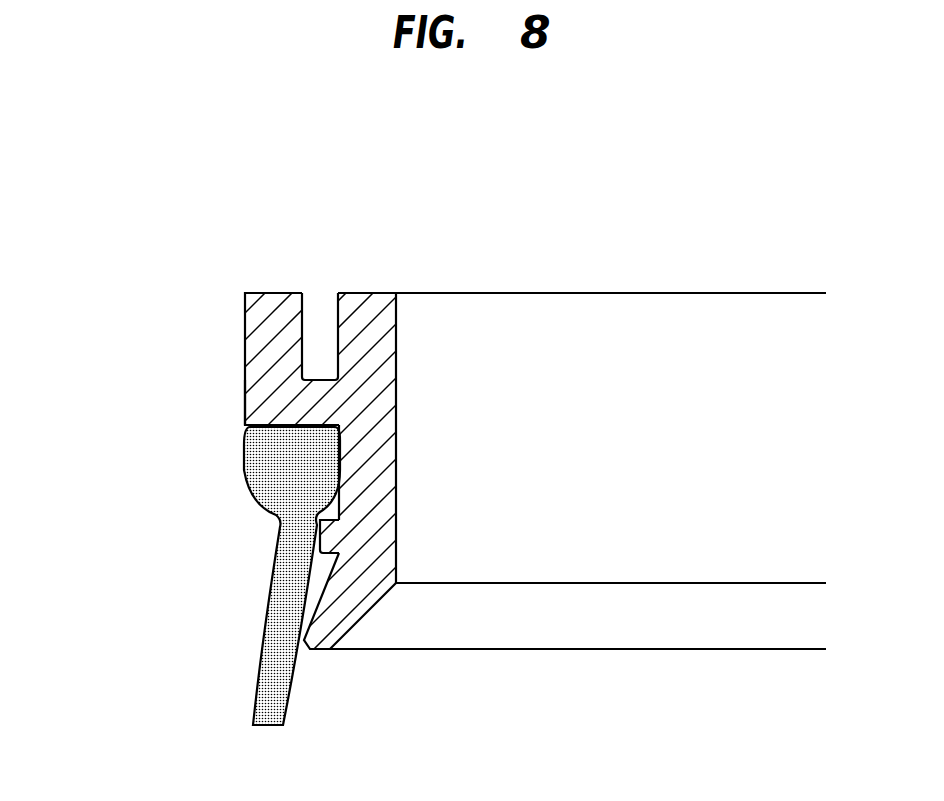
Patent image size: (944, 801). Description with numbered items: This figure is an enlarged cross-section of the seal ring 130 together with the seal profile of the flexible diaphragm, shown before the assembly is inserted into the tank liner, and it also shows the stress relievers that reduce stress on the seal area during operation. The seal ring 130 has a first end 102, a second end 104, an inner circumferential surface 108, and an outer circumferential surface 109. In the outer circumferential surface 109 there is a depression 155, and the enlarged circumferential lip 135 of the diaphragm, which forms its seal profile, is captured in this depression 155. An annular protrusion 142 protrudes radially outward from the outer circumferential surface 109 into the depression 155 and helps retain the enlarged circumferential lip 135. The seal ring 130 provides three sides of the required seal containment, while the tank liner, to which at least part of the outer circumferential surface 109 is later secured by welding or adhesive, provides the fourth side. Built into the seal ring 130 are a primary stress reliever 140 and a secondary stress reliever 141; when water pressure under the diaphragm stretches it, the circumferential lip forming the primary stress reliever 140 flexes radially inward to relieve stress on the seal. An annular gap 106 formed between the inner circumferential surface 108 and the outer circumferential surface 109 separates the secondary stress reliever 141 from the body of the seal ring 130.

The first end 102 is at (390, 668).
The second end 104 is at (382, 453).
The annular gap 106 is at (316, 285).
The inner circumferential surface 108 is at (412, 352).
The outer circumferential surface 109 is at (232, 388).
The seal ring 130 is at (243, 352).
The enlarged circumferential lip 135 is at (226, 475).
The primary stress reliever 140 is at (305, 643).
The secondary stress reliever 141 is at (366, 290).
The annular protrusion 142 is at (325, 542).
The depression 155 is at (340, 430).